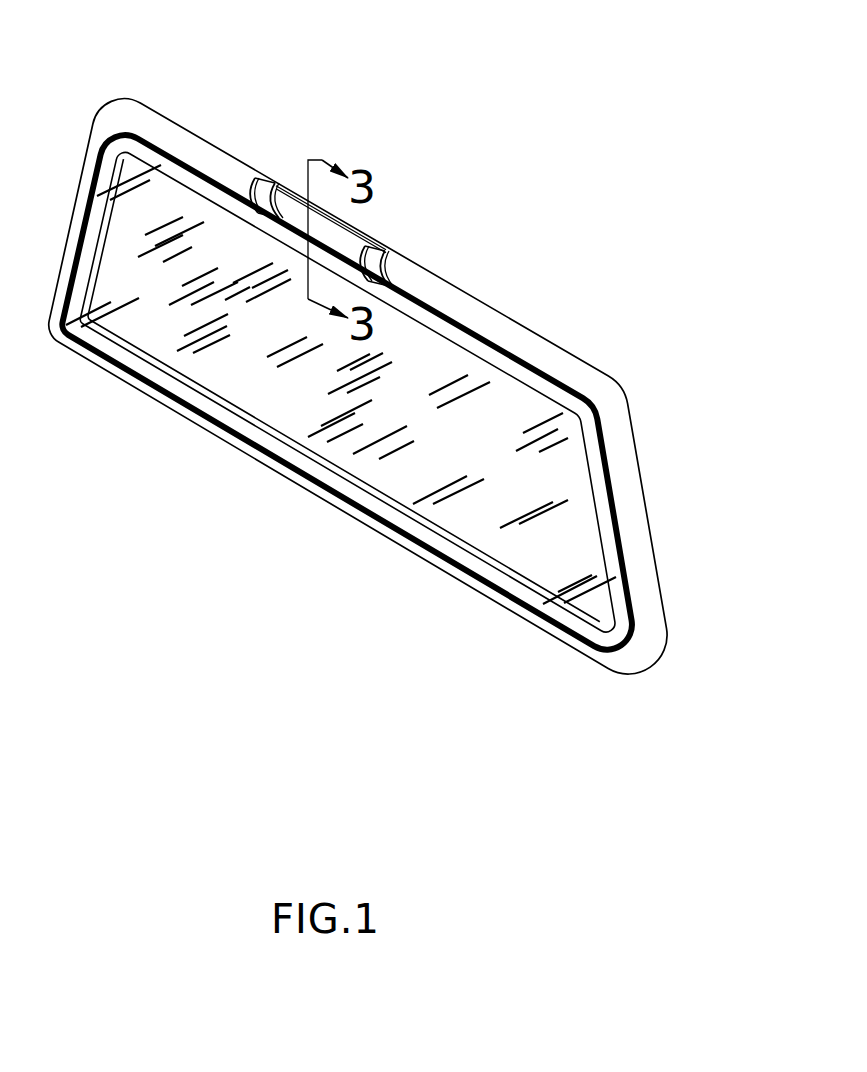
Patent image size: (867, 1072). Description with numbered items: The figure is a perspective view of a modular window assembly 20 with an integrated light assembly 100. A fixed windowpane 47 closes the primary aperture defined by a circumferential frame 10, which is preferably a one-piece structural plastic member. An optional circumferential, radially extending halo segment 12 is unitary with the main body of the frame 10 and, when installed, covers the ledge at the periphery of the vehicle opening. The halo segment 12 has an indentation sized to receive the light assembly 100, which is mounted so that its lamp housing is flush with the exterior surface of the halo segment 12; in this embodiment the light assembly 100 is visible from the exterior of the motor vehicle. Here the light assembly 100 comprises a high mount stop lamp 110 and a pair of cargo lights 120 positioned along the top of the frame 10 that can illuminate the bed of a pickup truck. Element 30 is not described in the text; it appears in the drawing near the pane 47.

The circumferential frame 10 is at (645, 465).
The halo segment 12 is at (483, 317).
The modular window assembly 20 is at (345, 148).
The window pane 30 is at (483, 572).
The windowpane 47 is at (341, 384).
The light assembly 100 is at (345, 185).
The high mount stop lamp 110 is at (298, 210).
The cargo lights 120 is at (267, 180).